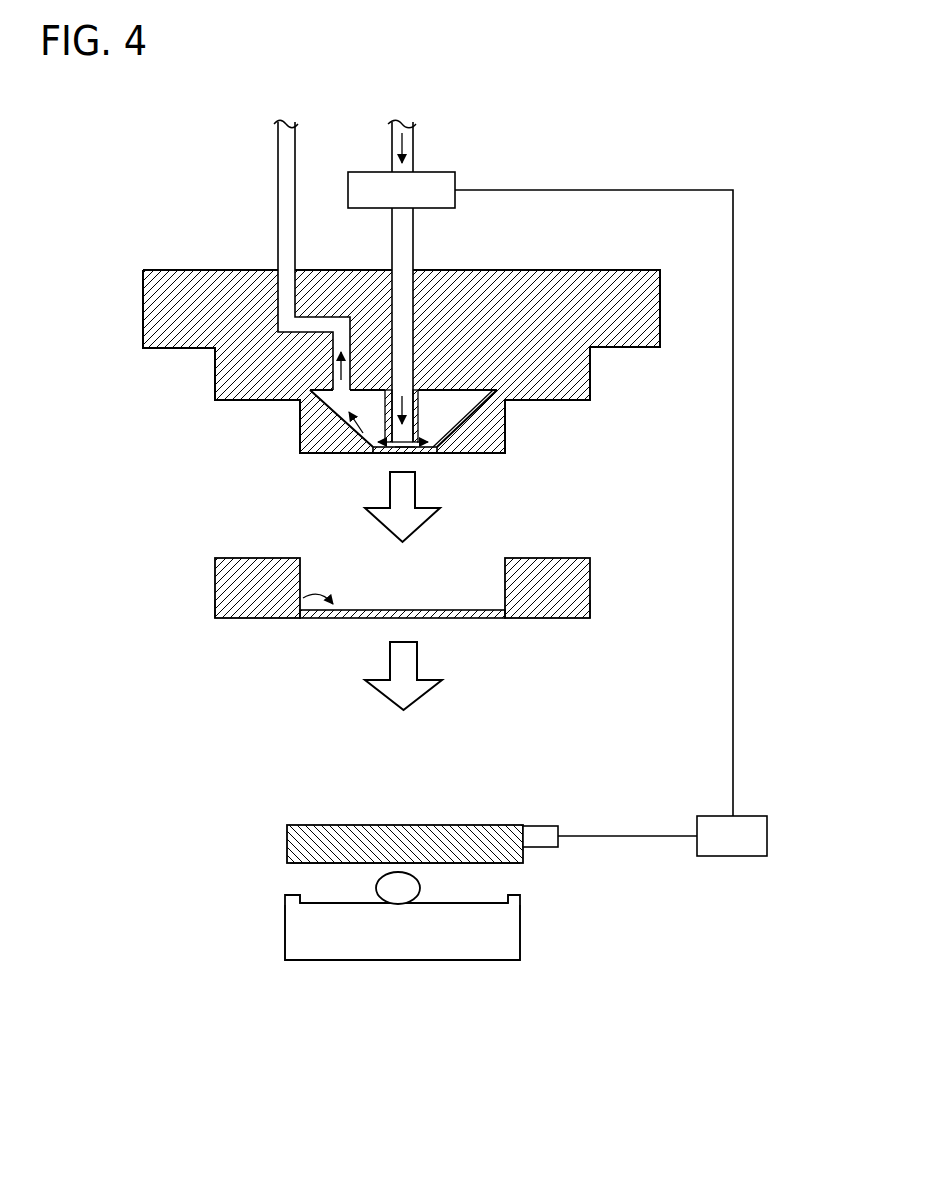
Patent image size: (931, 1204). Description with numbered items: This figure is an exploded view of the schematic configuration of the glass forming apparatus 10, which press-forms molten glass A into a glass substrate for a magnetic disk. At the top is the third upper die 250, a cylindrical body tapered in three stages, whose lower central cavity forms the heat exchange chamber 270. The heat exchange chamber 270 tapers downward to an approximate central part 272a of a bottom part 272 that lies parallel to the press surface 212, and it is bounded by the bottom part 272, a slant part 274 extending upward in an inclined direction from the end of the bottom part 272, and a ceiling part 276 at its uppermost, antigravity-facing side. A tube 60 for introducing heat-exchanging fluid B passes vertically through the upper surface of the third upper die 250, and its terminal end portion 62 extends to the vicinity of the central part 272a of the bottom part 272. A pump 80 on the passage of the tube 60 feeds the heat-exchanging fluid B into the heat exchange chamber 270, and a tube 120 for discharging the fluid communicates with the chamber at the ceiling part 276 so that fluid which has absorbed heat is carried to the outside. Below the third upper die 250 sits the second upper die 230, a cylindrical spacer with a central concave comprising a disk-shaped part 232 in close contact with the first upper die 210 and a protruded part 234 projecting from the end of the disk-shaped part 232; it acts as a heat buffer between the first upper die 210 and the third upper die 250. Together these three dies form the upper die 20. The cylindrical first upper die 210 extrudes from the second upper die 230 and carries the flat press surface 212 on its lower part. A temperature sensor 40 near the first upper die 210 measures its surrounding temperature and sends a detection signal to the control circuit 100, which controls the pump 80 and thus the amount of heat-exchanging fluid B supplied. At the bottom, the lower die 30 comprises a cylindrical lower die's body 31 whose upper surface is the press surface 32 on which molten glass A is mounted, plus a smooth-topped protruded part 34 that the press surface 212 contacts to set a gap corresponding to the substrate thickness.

The glass forming apparatus 10 is at (823, 143).
The upper die 20 is at (137, 253).
The lower die 30 is at (330, 958).
The lower die's body 31 is at (512, 943).
The press surface 32 is at (505, 897).
The protruded part 34 is at (290, 900).
The temperature sensor 40 is at (550, 822).
The tube for introducing a heat-exchanging fluid 60 is at (415, 252).
The terminal end portion 62 is at (440, 452).
The pump 80 is at (443, 172).
The control circuit 100 is at (752, 813).
The tube for discharging a heat-exchanging fluid 120 is at (280, 250).
The first upper die 210 is at (305, 845).
The press surface 212 is at (330, 865).
The second upper die 230 is at (215, 568).
The disk-shaped part 232 is at (298, 618).
The protruded part 234 is at (220, 603).
The third upper die 250 is at (143, 308).
The heat exchange chamber 270 is at (500, 367).
The bottom part 272 is at (377, 455).
The central part 272a is at (407, 455).
The slant part 274 is at (468, 420).
The ceiling part 276 is at (455, 387).
The molten glass A is at (412, 900).
The heat-exchanging fluid B is at (402, 385).